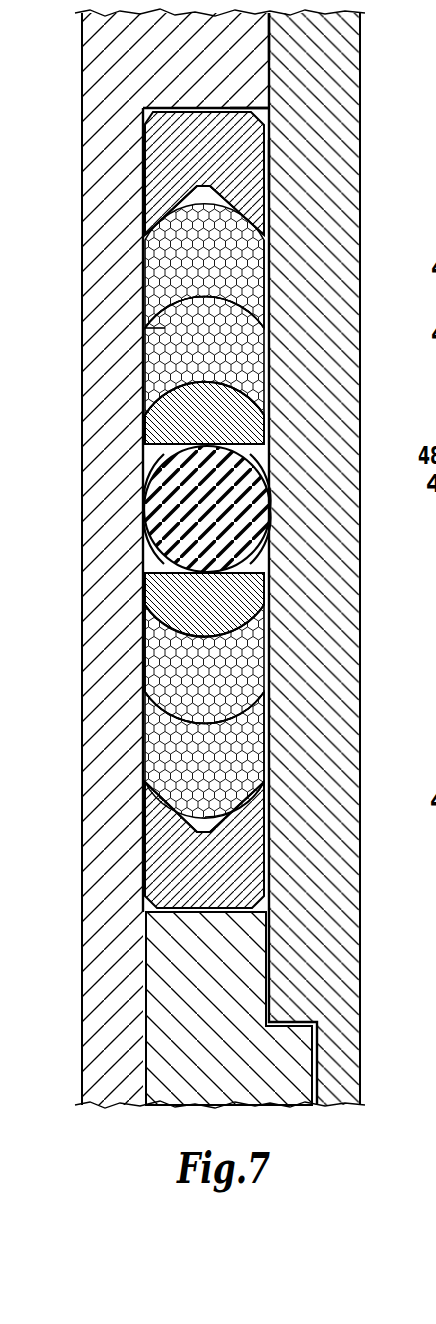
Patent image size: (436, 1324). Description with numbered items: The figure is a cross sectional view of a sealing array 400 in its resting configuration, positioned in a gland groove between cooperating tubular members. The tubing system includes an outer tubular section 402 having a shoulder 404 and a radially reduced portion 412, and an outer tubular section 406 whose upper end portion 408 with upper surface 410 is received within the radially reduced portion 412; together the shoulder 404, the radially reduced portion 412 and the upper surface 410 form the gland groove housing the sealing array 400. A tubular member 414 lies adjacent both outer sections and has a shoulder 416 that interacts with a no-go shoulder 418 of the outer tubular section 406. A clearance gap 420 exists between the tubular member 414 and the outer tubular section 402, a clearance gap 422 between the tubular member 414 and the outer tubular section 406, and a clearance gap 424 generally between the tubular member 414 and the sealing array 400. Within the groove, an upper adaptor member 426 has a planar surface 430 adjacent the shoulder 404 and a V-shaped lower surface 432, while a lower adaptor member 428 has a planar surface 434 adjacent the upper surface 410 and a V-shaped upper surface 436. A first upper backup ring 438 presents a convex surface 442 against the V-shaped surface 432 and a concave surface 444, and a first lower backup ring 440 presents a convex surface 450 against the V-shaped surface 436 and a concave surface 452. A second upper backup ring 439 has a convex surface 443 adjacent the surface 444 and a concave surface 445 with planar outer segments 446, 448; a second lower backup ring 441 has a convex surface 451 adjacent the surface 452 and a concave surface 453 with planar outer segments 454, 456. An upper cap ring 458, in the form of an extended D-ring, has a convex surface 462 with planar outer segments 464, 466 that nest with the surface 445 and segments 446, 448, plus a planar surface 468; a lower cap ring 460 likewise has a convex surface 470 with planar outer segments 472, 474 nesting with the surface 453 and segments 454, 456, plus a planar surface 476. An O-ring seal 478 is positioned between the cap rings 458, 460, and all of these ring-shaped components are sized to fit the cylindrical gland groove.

The sealing array 400 is at (270, 163).
The outer tubular section 402 is at (88, 33).
The shoulder 404 is at (141, 118).
The outer tubular section 406 is at (158, 1075).
The upper end portion 408 is at (150, 990).
The upper surface 410 is at (148, 950).
The radially reduced portion 412 is at (88, 645).
The tubular member 414 is at (345, 303).
The shoulder 416 is at (280, 1022).
The no-go shoulder 418 is at (318, 1045).
The clearance gap 420 is at (268, 52).
The clearance gap 422 is at (267, 964).
The clearance gap 424 is at (267, 840).
The upper adaptor member 426 is at (150, 146).
The lower adaptor member 428 is at (160, 862).
The substantially planar surface 430 is at (232, 108).
The substantially V-shaped lower surface 432 is at (218, 205).
The substantially planar surface 434 is at (267, 947).
The substantially V-shaped upper surface 436 is at (242, 790).
The first upper backup ring 438 is at (140, 245).
The second upper backup ring 439 is at (140, 333).
The first lower backup ring 440 is at (140, 732).
The second lower backup ring 441 is at (140, 655).
The substantially arc shaped convex surface 442 is at (152, 182).
The substantially arc shaped convex surface 443 is at (140, 316).
The substantially arc shaped concave surface 444 is at (150, 265).
The substantially arc shaped concave surface 445 is at (227, 382).
The substantially planar outer segment 446 is at (142, 372).
The substantially planar outer segment 448 is at (245, 430).
The substantially arc shaped convex surface 450 is at (175, 822).
The substantially arc shaped convex surface 451 is at (235, 713).
The substantially arc shaped concave surface 452 is at (140, 725).
The substantially arc shaped concave surface 453 is at (243, 640).
The substantially planar outer segment 454 is at (140, 615).
The substantially planar outer segment 456 is at (240, 595).
The upper cap ring 458 is at (268, 442).
The lower cap ring 460 is at (268, 580).
The substantially arc shaped convex surface 462 is at (140, 462).
The substantially planar outer segment 464 is at (262, 442).
The substantially planar outer segment 466 is at (135, 405).
The substantially planar surface 468 is at (138, 492).
The substantially arc shaped convex surface 470 is at (143, 575).
The substantially planar outer segment 472 is at (265, 578).
The substantially planar outer segment 474 is at (145, 592).
The substantially planar surface 476 is at (140, 560).
The O-ring seal 478 is at (248, 495).